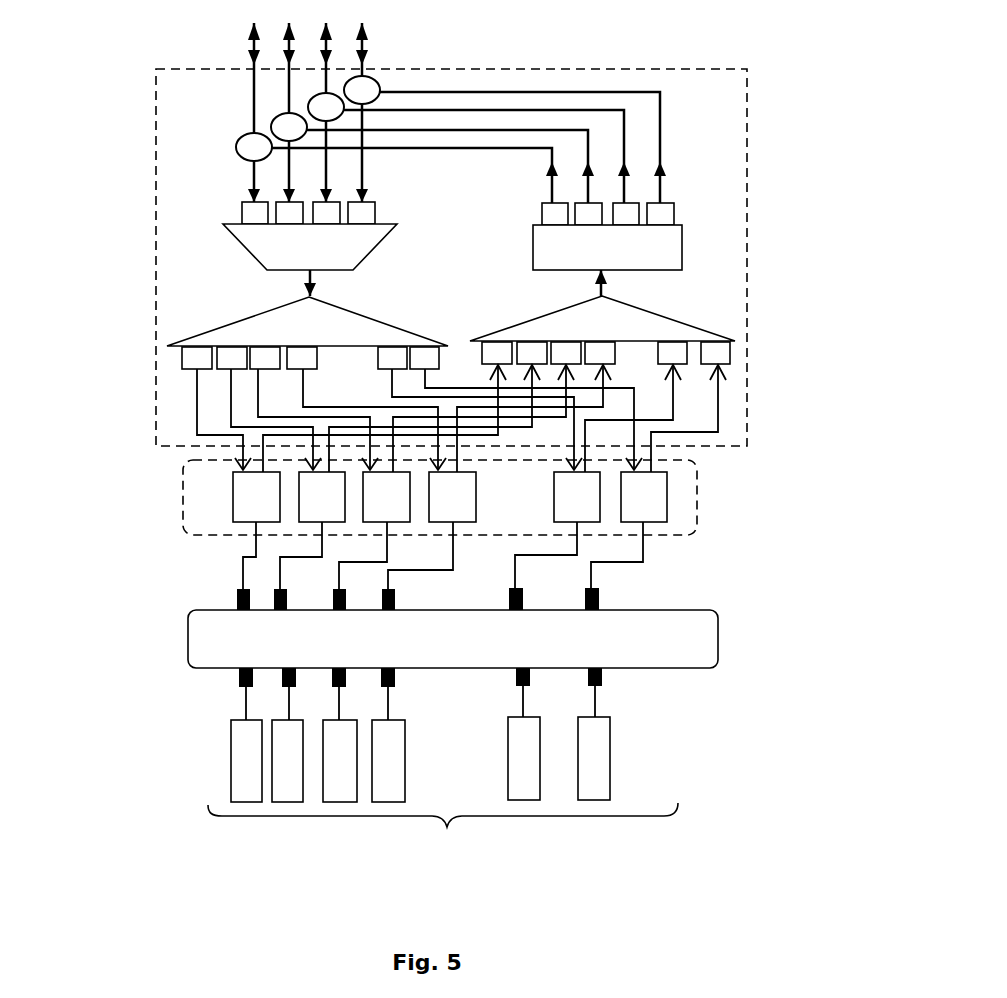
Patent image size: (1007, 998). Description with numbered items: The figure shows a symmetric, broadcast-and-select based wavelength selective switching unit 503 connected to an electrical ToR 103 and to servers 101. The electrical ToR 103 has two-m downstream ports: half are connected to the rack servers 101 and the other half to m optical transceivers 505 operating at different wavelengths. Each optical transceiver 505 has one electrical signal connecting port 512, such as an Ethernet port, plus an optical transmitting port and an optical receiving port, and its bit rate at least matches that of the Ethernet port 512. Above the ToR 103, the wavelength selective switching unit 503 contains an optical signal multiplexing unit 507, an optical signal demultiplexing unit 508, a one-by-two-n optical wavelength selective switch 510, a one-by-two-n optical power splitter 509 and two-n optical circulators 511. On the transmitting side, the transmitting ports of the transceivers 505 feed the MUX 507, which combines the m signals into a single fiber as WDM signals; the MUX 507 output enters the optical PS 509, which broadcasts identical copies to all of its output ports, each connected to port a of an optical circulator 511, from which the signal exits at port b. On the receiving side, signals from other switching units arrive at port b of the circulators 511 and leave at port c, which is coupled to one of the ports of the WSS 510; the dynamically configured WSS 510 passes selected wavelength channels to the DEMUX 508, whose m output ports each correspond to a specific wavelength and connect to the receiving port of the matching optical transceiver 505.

The wavelength selective switching unit 503 is at (649, 65).
The optical circulator 511 is at (235, 143).
The optical wavelength selective switch 510 is at (252, 252).
The optical power splitter 509 is at (683, 247).
The optical signal demultiplexing unit 508 is at (260, 315).
The optical signal multiplexing unit 507 is at (658, 320).
The optical transceiver 505 is at (233, 503).
The electrical signal connecting port 512 is at (597, 595).
The electrical ToR 103 is at (187, 637).
The server 101 is at (228, 762).